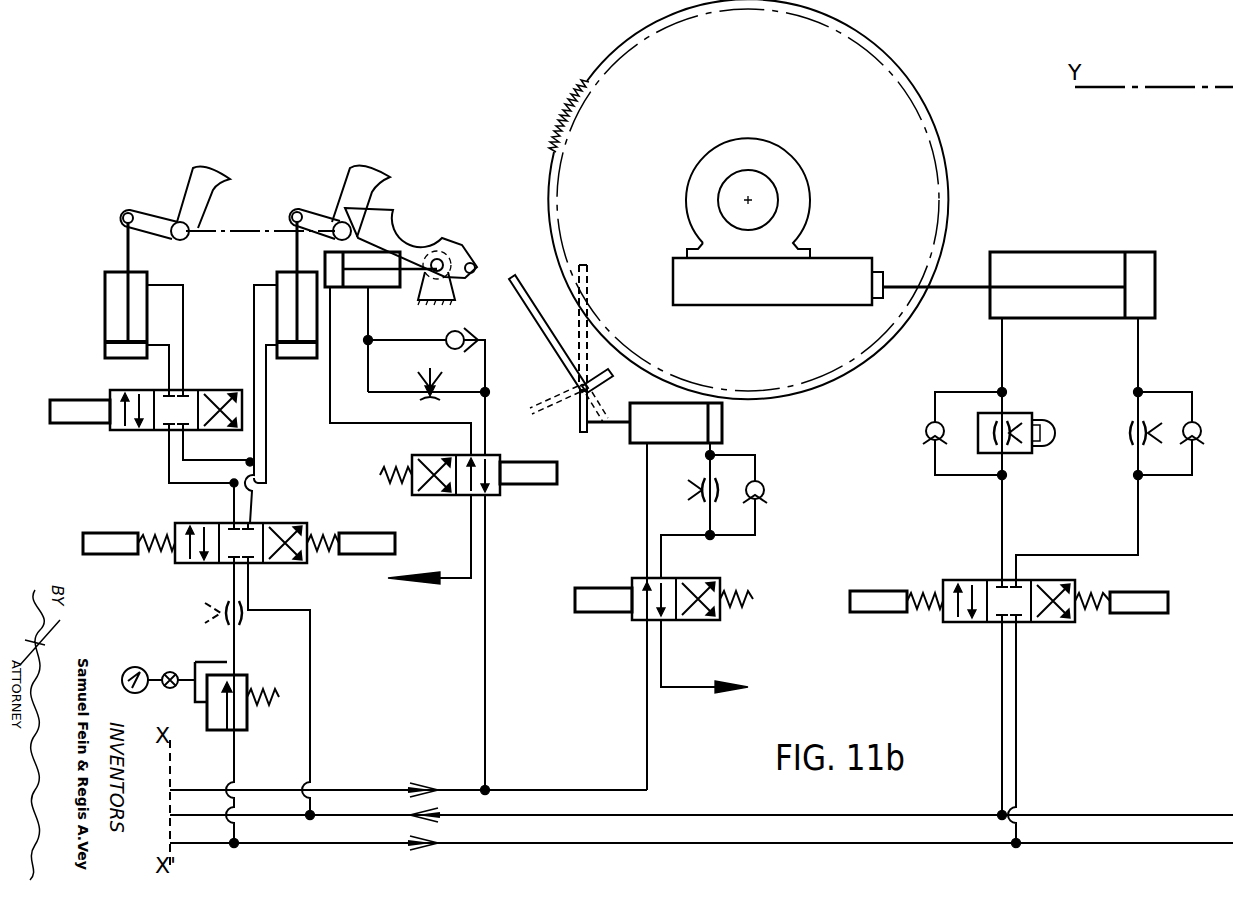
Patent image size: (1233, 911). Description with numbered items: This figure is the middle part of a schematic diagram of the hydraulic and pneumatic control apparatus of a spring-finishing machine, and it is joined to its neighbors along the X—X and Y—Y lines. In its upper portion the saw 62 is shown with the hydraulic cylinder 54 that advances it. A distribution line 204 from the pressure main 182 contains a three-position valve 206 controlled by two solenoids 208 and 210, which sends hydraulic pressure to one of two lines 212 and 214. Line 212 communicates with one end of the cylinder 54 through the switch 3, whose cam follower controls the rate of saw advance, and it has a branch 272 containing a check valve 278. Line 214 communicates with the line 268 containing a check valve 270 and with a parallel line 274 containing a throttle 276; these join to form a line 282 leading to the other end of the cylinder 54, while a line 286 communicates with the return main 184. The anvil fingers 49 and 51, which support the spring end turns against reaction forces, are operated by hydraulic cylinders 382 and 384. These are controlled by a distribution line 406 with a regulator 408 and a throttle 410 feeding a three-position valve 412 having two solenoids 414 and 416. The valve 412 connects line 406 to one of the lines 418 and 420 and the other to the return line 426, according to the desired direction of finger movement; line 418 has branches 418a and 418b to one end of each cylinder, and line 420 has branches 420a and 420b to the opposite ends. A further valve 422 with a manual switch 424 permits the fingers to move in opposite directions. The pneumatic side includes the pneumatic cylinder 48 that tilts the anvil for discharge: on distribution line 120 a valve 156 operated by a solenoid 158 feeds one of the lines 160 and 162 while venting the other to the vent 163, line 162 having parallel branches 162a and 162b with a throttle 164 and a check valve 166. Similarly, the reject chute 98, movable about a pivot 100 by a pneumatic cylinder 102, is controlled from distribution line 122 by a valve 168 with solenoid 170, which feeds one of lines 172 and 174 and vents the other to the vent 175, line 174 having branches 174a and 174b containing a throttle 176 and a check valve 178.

The switch 3 is at (1023, 413).
The pneumatic cylinder 48 is at (353, 287).
The finger 49 is at (200, 172).
The finger 51 is at (352, 173).
The hydraulic cylinder 54 is at (1045, 251).
The saw 62 is at (900, 72).
The reject chute 98 is at (520, 283).
The pivot 100 is at (600, 390).
The pneumatic cylinder 102 is at (724, 421).
The distribution line 120 is at (486, 695).
The distribution line 122 is at (547, 780).
The valve 156 is at (449, 497).
The solenoid 158 is at (537, 485).
The line 160 is at (392, 424).
The line 162 is at (489, 439).
The branch 162a is at (393, 390).
The branch 162b is at (403, 338).
The vent 163 is at (433, 580).
The throttle 164 is at (440, 380).
The check valve 166 is at (446, 336).
The valve 168 is at (688, 620).
The solenoid 170 is at (615, 587).
The line 172 is at (642, 525).
The line 174 is at (667, 552).
The branch 174a is at (710, 517).
The branch 174b is at (760, 522).
The vent 175 is at (680, 688).
The throttle 176 is at (703, 475).
The check valve 178 is at (765, 483).
The pressure main 182 is at (618, 843).
The return main 184 is at (541, 815).
The distribution line 204 is at (1018, 731).
The three-position valve 206 is at (988, 580).
The solenoid 208 is at (883, 590).
The solenoid 210 is at (1152, 592).
The line 212 is at (998, 508).
The line 214 is at (1093, 555).
The line 268 is at (1185, 476).
The check valve 270 is at (1203, 413).
The branch 272 is at (934, 463).
The line 274 is at (1137, 457).
The throttle 276 is at (1136, 420).
The check valve 278 is at (925, 425).
The line 282 is at (1140, 340).
The line 286 is at (998, 693).
The hydraulic cylinder 382 is at (105, 320).
The hydraulic cylinder 384 is at (303, 360).
The distribution line 406 is at (236, 758).
The regulator 408 is at (248, 678).
The throttle 410 is at (240, 622).
The three-position valve 412 is at (193, 565).
The solenoid 414 is at (113, 531).
The solenoid 416 is at (358, 533).
The line 418 is at (230, 501).
The branch 418a is at (170, 352).
The branch 418b is at (268, 452).
The line 420 is at (256, 506).
The branch 420a is at (183, 284).
The branch 420b is at (262, 282).
The valve 422 is at (196, 392).
The manual switch 424 is at (76, 402).
The return line 426 is at (312, 664).